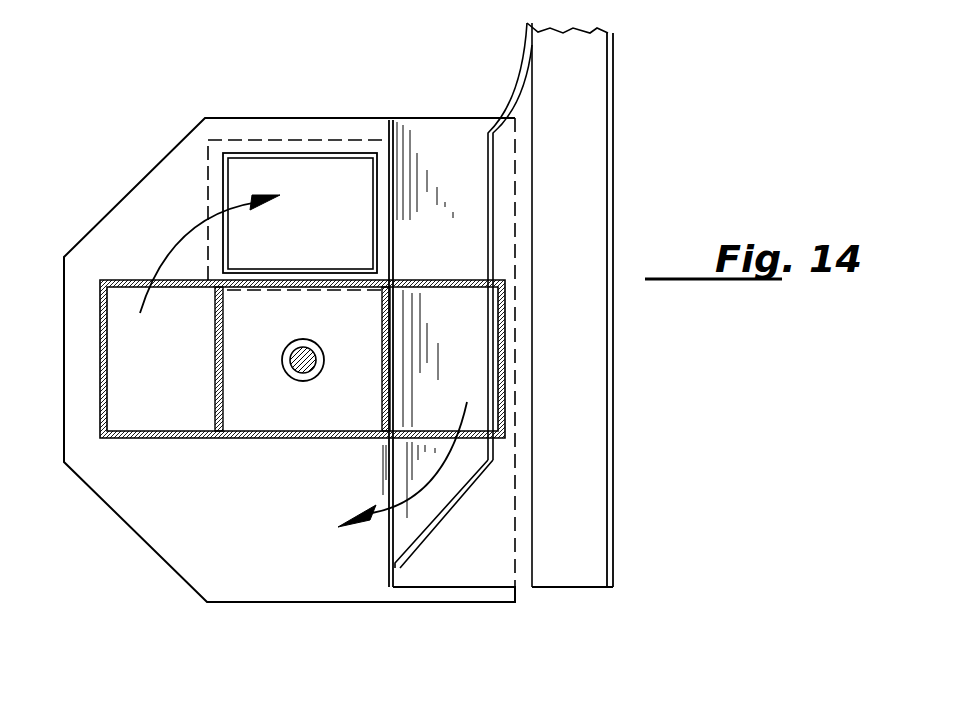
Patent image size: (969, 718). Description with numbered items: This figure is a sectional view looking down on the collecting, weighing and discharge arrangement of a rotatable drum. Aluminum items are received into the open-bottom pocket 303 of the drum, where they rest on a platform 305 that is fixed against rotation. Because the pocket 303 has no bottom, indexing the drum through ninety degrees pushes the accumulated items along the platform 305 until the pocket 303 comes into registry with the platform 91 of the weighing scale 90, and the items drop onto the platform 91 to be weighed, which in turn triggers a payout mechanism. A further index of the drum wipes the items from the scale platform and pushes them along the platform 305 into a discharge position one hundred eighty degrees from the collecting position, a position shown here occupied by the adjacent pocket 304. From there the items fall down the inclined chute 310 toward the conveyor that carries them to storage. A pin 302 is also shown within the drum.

The weighing scale 90 is at (228, 140).
The scale platform 91 is at (308, 183).
The pivot pin 302 is at (291, 351).
The open-bottom pocket 303 is at (175, 417).
The pocket 304 is at (453, 302).
The platform 305 is at (130, 223).
The inclined chute 310 is at (525, 108).